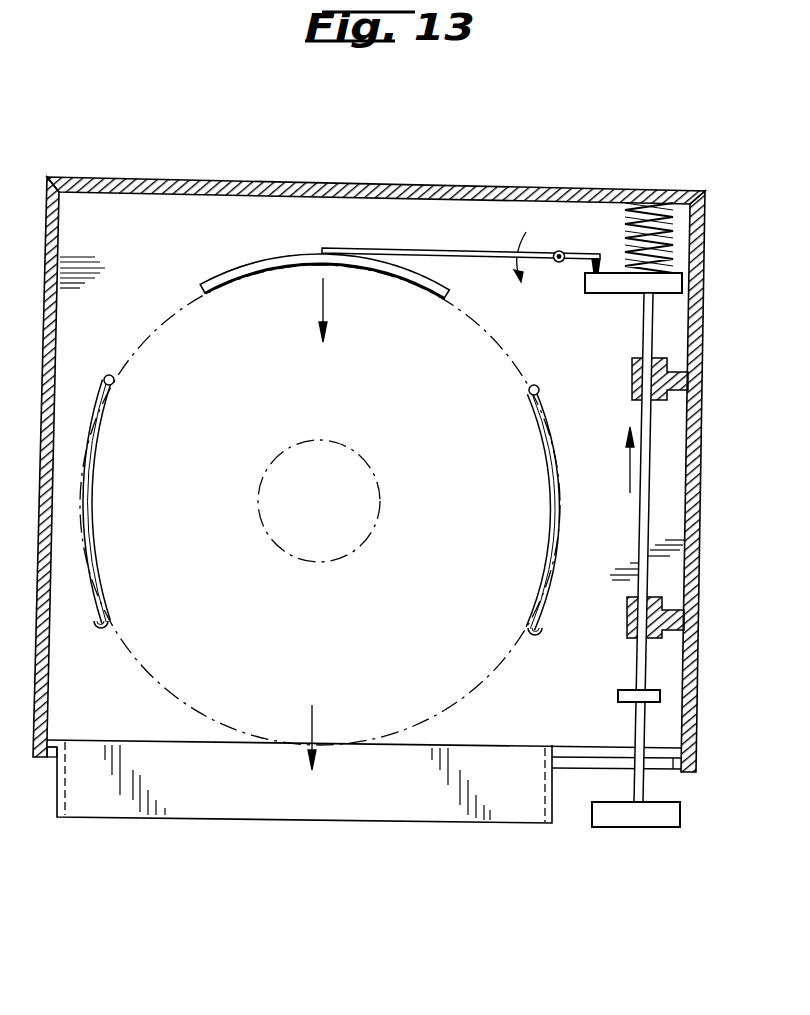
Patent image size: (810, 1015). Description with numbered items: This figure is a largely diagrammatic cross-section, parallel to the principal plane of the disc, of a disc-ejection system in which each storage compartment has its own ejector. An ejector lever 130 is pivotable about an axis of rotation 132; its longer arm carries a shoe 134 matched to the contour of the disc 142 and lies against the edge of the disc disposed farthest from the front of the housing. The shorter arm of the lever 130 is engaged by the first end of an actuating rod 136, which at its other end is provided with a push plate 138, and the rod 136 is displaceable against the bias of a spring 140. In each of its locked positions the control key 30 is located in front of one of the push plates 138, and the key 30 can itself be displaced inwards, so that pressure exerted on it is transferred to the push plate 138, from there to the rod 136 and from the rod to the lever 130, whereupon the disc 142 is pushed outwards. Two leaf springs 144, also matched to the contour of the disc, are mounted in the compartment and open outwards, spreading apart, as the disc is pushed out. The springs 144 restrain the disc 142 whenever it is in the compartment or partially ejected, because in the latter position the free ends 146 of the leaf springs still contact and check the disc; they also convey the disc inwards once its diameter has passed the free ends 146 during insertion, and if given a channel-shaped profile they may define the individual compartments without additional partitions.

The control key 30 is at (682, 812).
The ejector lever 130 is at (466, 250).
The axis of rotation 132 is at (559, 251).
The shoe 134 is at (233, 273).
The actuating rod 136 is at (645, 338).
The push plate 138 is at (647, 690).
The spring 140 is at (672, 212).
The disc 142 is at (480, 683).
The leaf spring 144 is at (97, 427).
The free end 146 is at (107, 633).